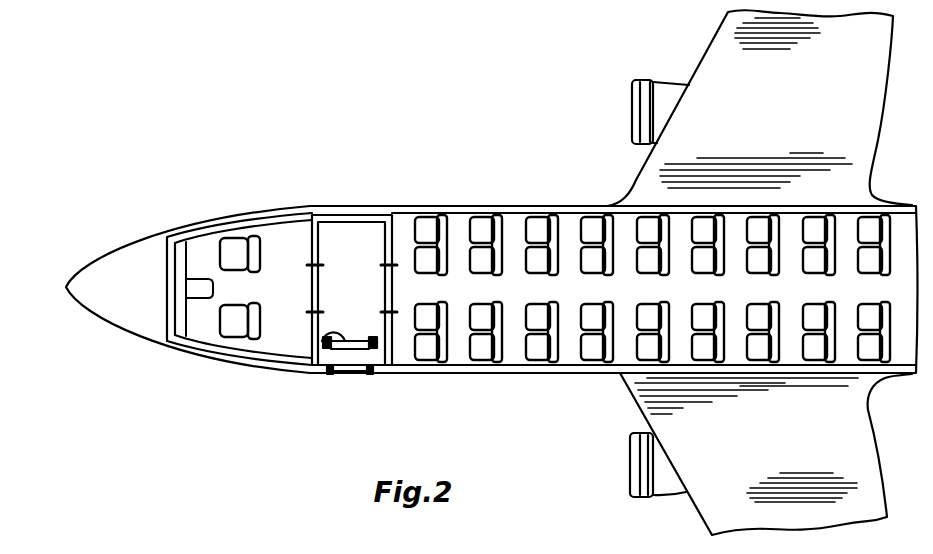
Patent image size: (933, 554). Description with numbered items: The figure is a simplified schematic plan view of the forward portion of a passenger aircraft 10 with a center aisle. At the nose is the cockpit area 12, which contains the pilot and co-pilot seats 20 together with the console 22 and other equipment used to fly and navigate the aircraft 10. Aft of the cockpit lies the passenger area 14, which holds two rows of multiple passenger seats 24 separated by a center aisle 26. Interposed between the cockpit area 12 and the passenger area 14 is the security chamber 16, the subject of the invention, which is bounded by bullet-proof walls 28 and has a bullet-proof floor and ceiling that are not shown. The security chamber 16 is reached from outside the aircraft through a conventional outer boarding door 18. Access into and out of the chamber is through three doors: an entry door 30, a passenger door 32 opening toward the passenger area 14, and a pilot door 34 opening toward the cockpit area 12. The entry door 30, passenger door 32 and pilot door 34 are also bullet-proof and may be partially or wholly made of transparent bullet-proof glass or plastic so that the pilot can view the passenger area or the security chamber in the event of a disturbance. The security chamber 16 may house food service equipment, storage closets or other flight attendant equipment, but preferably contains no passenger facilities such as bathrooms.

The passenger aircraft 10 is at (374, 118).
The cockpit area 12 is at (187, 230).
The passenger area 14 is at (453, 248).
The security chamber 16 is at (352, 237).
The outer boarding door 18 is at (358, 369).
The pilot and co-pilot seats 20 is at (224, 248).
The console 22 is at (184, 290).
The passenger seats 24 is at (482, 226).
The center aisle 26 is at (517, 288).
The bullet-proof walls 28 is at (309, 318).
The entry door 30 is at (319, 341).
The passenger door 32 is at (396, 226).
The pilot door 34 is at (311, 288).